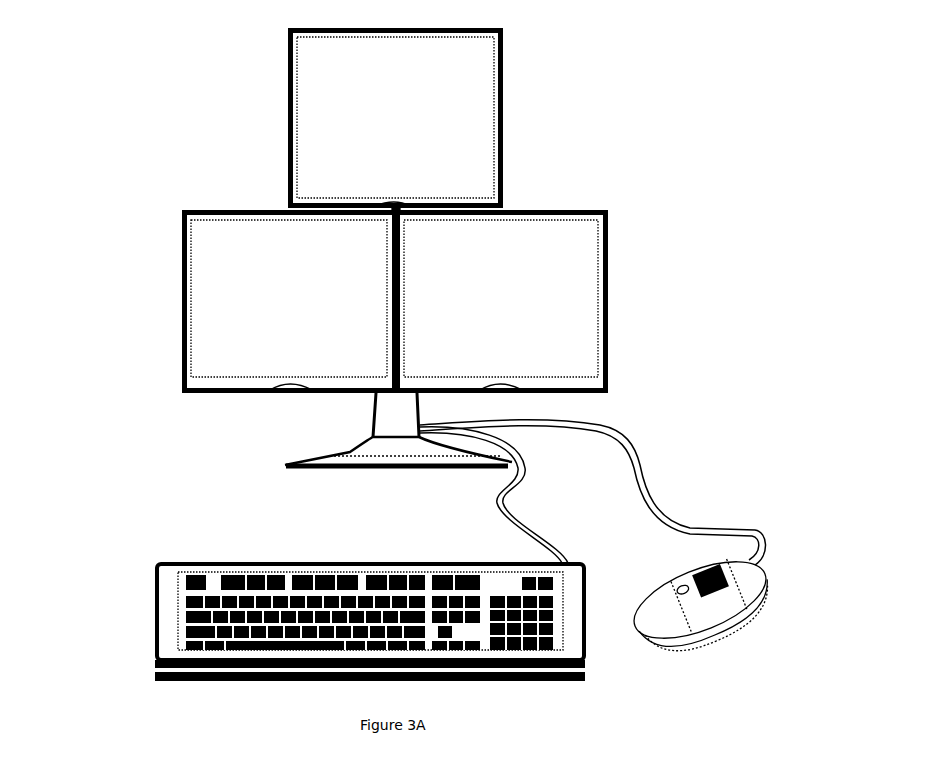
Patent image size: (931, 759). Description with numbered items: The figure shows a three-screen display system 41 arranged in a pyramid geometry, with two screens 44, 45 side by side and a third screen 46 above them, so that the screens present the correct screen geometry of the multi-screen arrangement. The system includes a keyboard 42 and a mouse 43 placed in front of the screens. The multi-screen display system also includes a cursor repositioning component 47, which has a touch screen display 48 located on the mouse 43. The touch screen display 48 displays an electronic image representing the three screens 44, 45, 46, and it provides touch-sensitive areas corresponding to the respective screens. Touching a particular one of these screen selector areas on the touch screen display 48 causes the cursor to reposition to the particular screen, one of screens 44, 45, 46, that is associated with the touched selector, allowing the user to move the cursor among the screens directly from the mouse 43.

The three-screen display system 41 is at (240, 148).
The keyboard 42 is at (165, 612).
The mouse 43 is at (675, 612).
The screen 44 is at (225, 346).
The screen 45 is at (573, 333).
The screen 46 is at (437, 114).
The cursor repositioning component 47 is at (785, 577).
The touch screen display 48 is at (725, 565).